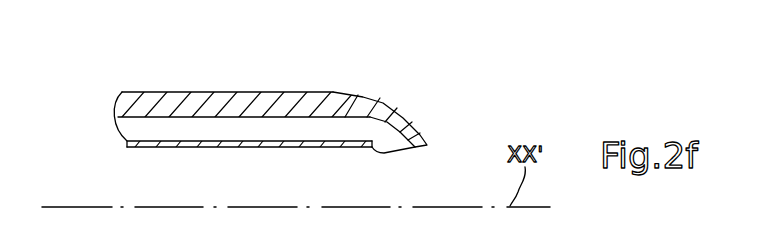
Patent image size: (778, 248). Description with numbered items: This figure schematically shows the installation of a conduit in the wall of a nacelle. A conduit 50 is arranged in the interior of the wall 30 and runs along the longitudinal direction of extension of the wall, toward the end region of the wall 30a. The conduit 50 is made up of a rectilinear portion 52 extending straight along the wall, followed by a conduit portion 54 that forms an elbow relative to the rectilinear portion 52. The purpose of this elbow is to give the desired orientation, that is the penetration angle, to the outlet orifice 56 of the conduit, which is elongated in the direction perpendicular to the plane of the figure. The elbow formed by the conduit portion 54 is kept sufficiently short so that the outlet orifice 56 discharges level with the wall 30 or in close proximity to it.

The wall 30 is at (180, 92).
The curved end portion of cover layer 30a is at (408, 117).
The conduit 50 is at (222, 150).
The rectilinear portion 52 is at (297, 142).
The conduit portion forming an elbow 54 is at (372, 146).
The outlet orifice 56 is at (400, 153).